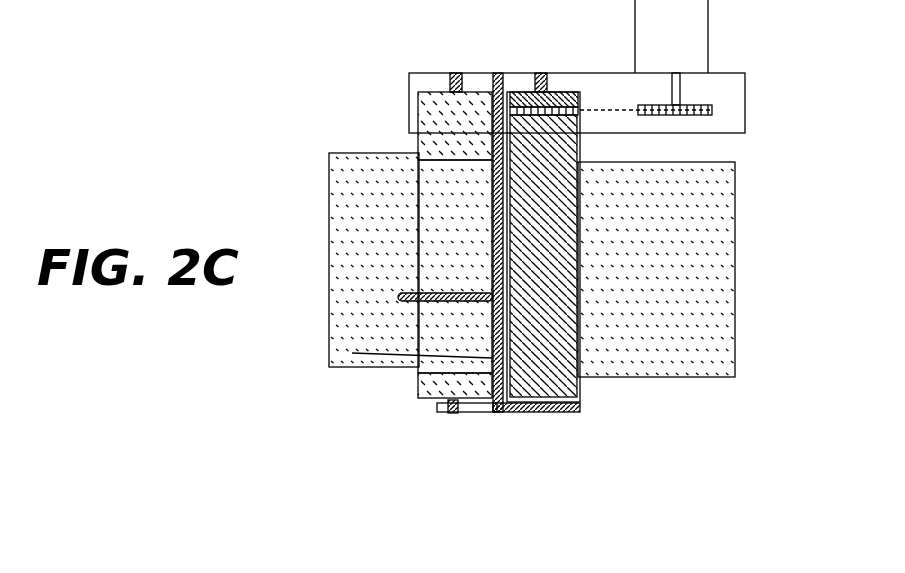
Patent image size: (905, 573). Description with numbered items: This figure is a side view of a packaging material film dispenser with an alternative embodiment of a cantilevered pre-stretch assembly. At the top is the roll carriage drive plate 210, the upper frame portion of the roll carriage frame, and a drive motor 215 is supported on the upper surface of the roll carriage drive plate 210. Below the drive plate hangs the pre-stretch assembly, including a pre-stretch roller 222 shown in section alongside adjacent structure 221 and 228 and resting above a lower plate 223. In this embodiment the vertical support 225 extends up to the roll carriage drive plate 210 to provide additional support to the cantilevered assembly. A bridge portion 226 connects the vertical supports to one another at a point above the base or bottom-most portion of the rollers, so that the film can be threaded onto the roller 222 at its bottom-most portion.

The roll carriage drive plate 210 is at (600, 88).
The drive motor 215 is at (695, 14).
The substrate 221 is at (347, 232).
The pre-stretch roller 222 is at (572, 383).
The base plate 223 is at (565, 413).
The vertical support 225 is at (352, 353).
The bridge portion 226 is at (398, 296).
The insulating block 228 is at (435, 113).